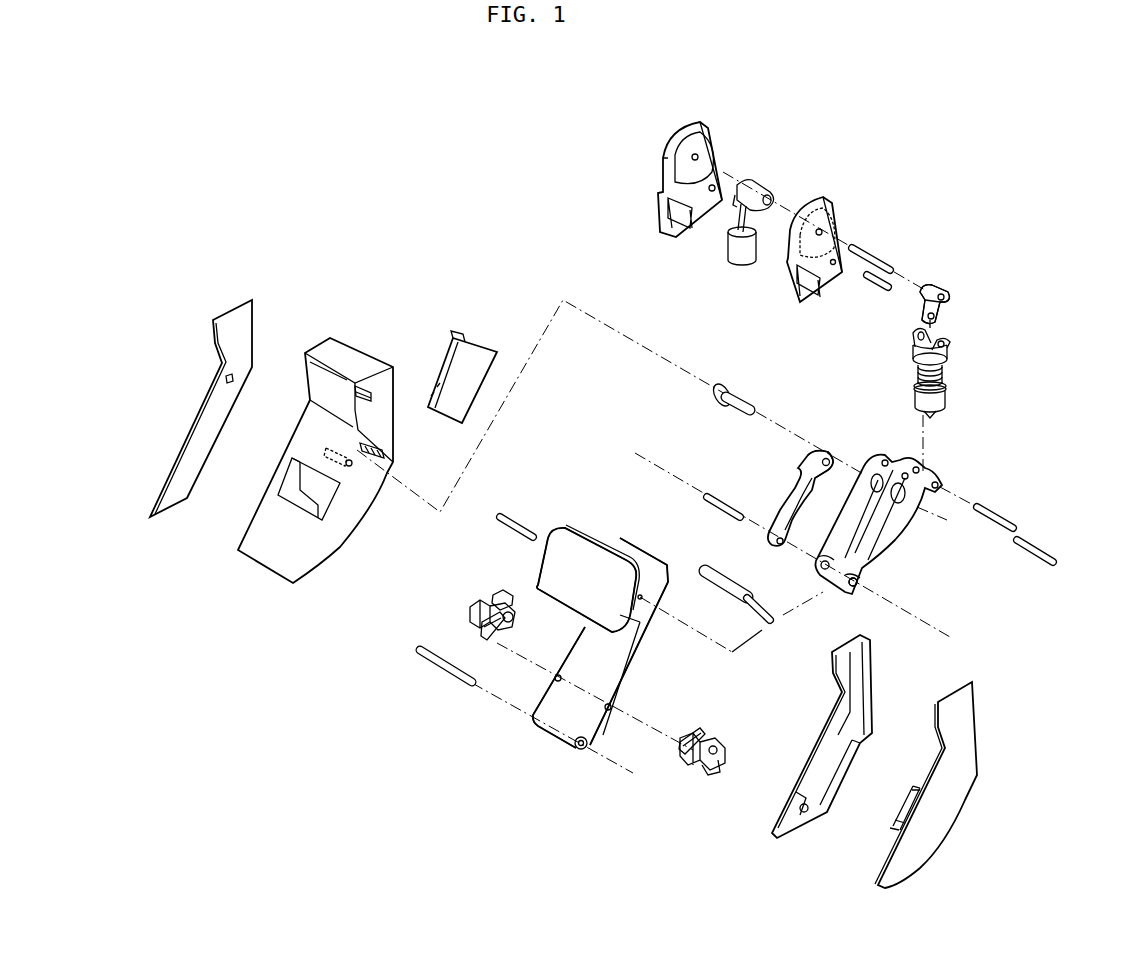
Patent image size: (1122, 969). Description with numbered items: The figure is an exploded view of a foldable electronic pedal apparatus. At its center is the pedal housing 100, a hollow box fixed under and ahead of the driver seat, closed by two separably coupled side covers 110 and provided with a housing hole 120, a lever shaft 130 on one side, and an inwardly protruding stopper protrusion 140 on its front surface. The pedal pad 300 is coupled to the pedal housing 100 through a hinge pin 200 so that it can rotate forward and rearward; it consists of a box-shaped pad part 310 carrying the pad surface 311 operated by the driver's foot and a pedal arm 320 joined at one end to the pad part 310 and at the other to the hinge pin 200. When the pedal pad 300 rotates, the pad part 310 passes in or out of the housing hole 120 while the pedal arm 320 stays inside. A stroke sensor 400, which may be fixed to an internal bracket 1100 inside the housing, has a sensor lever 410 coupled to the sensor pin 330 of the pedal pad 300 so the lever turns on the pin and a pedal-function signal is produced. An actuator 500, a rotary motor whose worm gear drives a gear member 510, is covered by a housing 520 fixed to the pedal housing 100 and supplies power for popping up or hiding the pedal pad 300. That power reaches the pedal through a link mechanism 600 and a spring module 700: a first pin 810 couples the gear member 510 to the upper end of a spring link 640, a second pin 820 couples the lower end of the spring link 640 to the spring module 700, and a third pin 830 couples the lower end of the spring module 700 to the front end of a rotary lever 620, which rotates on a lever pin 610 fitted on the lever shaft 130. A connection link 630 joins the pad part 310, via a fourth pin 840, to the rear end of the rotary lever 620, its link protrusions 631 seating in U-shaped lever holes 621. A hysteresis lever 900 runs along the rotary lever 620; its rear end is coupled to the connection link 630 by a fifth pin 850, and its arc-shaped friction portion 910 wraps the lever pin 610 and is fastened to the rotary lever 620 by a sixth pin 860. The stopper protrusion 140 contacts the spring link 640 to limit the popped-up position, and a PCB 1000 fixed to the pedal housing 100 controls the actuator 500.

The pedal housing 100 is at (268, 547).
The side cover 110 is at (208, 423).
The housing hole 120 is at (295, 496).
The lever shaft 130 is at (392, 468).
The stopper protrusion 140 is at (362, 392).
The hinge pin 200 is at (436, 660).
The pedal pad 300 is at (527, 727).
The pad part 310 is at (620, 548).
The pad surface 311 is at (570, 548).
The pedal arm 320 is at (567, 722).
The sensor pin 330 is at (558, 675).
The stroke sensor 400 is at (490, 596).
The sensor lever 410 is at (482, 633).
The actuator 500 is at (744, 250).
The gear member 510 is at (752, 190).
The housing 520 is at (660, 170).
The link mechanism 600 is at (950, 297).
The lever pin 610 is at (740, 385).
The rotary lever 620 is at (893, 540).
The lever hole 621 is at (860, 578).
The connection link 630 is at (740, 620).
The link protrusion 631 is at (777, 622).
The spring link 640 is at (937, 292).
The spring module 700 is at (950, 371).
The first pin 810 is at (878, 262).
The second pin 820 is at (874, 290).
The third pin 830 is at (995, 510).
The fourth pin 840 is at (515, 521).
The fifth pin 850 is at (712, 504).
The sixth pin 860 is at (1037, 550).
The hysteresis lever 900 is at (797, 497).
The friction portion 910 is at (808, 460).
The PCB 1000 is at (478, 356).
The internal bracket 1100 is at (826, 800).